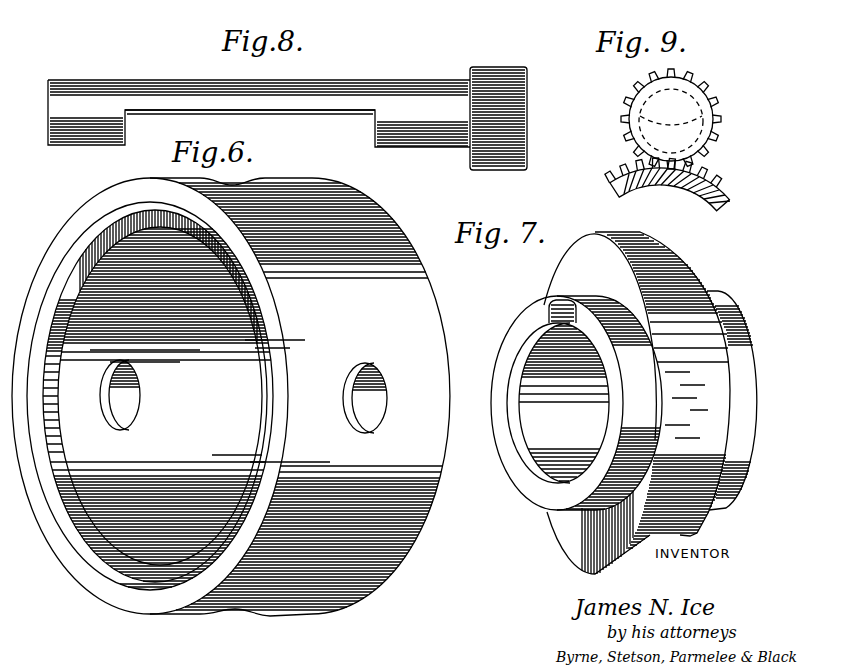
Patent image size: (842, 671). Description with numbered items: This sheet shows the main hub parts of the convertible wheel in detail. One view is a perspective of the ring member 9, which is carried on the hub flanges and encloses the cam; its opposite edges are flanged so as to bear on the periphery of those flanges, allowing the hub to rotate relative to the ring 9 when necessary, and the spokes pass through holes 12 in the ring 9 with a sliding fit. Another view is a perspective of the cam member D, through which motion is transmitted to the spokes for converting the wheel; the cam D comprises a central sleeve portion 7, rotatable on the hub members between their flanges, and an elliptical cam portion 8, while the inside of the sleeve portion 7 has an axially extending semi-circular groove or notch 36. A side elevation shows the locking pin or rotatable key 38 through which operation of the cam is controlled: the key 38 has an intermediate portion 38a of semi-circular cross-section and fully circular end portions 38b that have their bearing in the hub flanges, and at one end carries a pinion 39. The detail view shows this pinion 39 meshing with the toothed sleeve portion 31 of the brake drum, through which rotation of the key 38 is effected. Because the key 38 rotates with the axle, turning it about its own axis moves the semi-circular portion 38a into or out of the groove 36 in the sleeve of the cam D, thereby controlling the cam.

In FIG. 7, the central sleeve portion 7 is at (505, 358).
In FIG. 7, the elliptical cam portion 8 is at (690, 262).
In FIG. 6, the ring member 9 is at (231, 397).
In FIG. 6, the holes 12 is at (118, 424).
In FIG. 9, the sleeve portion 31 is at (733, 202).
In FIG. 7, the semi-circular groove 36 is at (551, 302).
In FIG. 8, the rotatable key 38 is at (366, 97).
In FIG. 9, the rotatable key 38 is at (698, 88).
In FIG. 8, the intermediate portion 38a is at (255, 97).
In FIG. 8, the end portions 38b is at (435, 77).
In FIG. 8, the pinion 39 is at (500, 82).
In FIG. 9, the pinion 39 is at (715, 99).
In FIG. 7, the cam member D is at (716, 299).